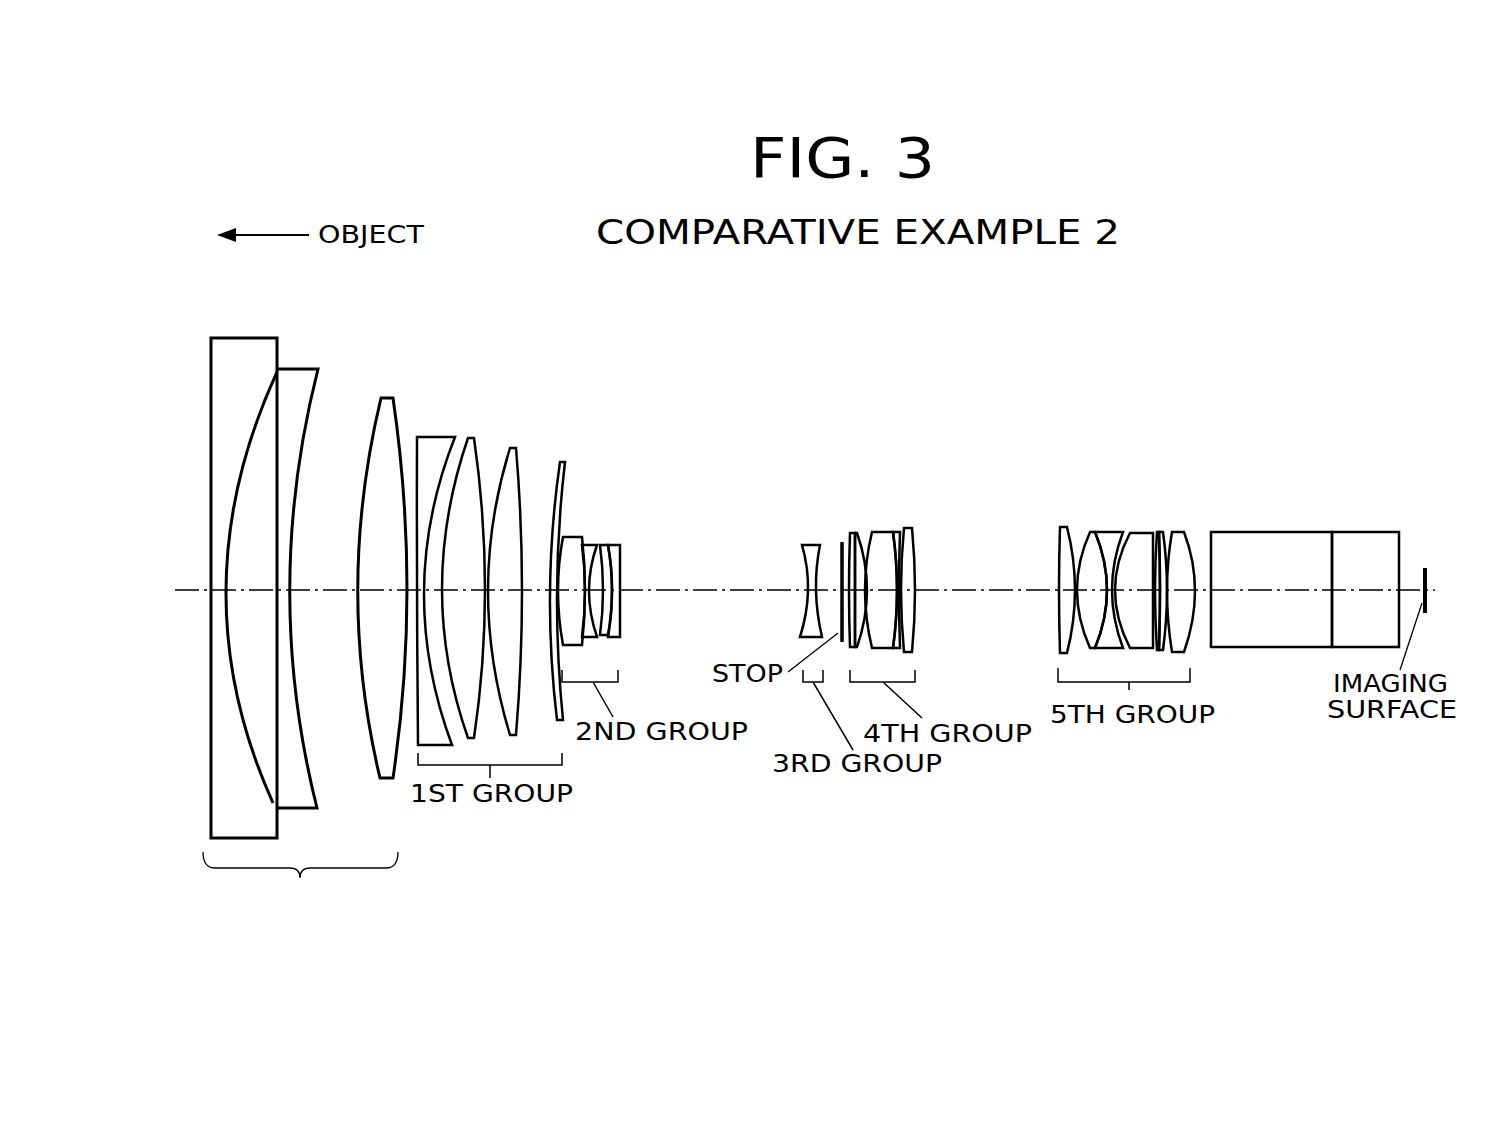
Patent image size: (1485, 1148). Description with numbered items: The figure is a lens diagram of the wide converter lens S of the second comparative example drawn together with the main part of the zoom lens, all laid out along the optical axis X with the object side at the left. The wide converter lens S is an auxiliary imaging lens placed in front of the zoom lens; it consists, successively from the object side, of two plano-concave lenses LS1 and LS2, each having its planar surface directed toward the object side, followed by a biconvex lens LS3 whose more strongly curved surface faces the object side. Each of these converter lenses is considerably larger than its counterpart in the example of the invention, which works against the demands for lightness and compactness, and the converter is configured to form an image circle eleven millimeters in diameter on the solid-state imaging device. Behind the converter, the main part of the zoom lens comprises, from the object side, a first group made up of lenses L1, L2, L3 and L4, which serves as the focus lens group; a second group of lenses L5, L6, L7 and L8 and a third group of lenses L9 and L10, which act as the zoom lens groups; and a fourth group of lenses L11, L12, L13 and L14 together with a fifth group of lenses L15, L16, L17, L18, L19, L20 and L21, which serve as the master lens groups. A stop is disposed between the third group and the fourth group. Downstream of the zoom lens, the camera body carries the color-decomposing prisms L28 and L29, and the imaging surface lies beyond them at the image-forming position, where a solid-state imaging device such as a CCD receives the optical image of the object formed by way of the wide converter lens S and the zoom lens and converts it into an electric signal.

The plano-concave lens LS1 is at (246, 340).
The plano-concave lens LS2 is at (302, 375).
The biconvex lens LS3 is at (388, 398).
The wide converter lens S is at (300, 875).
The optical axis X is at (201, 585).
The first group lens L1 is at (430, 437).
The first group lens L2 is at (471, 440).
The first group lens L3 is at (513, 450).
The first group lens L4 is at (562, 464).
The second group lens L5 is at (568, 537).
The second group lens L6 is at (588, 545).
The second group lens L7 is at (605, 545).
The second group lens L8 is at (622, 550).
The third group lens L9 is at (806, 543).
The third group lens L10 is at (848, 535).
The fourth group lens L11 is at (853, 533).
The fourth group lens L12 is at (868, 533).
The fourth group lens L13 is at (894, 532).
The fourth group lens L14 is at (913, 538).
The fifth group lens L15 is at (1060, 528).
The fifth group lens L16 is at (1090, 532).
The fifth group lens L17 is at (1110, 532).
The fifth group lens L18 is at (1133, 533).
The fifth group lens L19 is at (1158, 532).
The fifth group lens L20 is at (1162, 532).
The fifth group lens L21 is at (1186, 533).
The color-decomposing prism L28 is at (1300, 540).
The color-decomposing prism L29 is at (1370, 540).